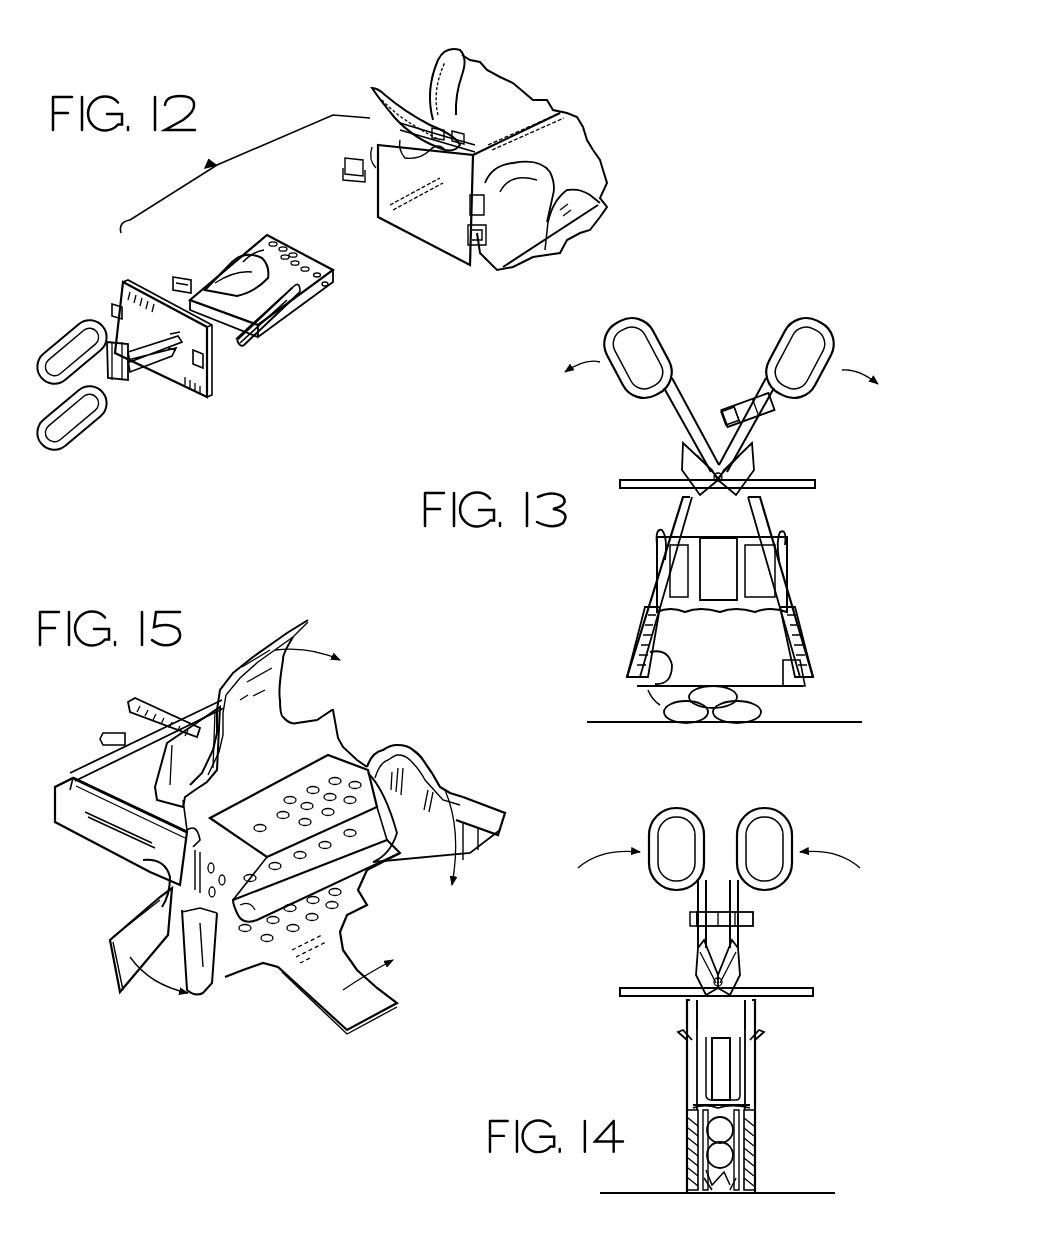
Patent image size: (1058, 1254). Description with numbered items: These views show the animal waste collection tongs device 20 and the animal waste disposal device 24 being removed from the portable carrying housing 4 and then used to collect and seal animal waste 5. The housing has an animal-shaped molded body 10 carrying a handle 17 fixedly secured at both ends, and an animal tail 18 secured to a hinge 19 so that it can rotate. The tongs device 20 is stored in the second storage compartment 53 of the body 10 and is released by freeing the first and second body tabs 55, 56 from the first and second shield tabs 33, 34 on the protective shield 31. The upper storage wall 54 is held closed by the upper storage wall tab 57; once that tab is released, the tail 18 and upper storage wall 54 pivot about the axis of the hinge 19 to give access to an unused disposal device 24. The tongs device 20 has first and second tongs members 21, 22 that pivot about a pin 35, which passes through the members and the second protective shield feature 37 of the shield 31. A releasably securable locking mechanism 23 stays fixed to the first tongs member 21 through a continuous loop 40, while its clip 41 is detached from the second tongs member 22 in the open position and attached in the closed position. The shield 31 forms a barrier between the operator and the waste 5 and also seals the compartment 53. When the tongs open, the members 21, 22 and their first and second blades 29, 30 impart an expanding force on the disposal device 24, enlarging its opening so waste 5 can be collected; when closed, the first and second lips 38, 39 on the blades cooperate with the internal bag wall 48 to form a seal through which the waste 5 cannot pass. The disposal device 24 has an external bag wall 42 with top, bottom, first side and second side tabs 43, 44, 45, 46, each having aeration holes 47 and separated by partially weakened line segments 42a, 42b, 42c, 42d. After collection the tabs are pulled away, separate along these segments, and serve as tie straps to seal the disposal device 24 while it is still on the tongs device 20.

In FIG. 12, the portable carrying housing 4 is at (552, 80).
In FIG. 13, the animal waste 5 is at (783, 722).
In FIG. 14, the animal waste 5 is at (722, 1150).
In FIG. 12, the molded body 10 is at (608, 157).
In FIG. 12, the handle 17 is at (440, 42).
In FIG. 12, the tail 18 is at (372, 95).
In FIG. 12, the hinge 19 is at (420, 118).
In FIG. 12, the animal waste collection tongs device 20 is at (103, 448).
In FIG. 12, the first tongs member 21 is at (55, 350).
In FIG. 13, the first tongs member 21 is at (826, 325).
In FIG. 14, the first tongs member 21 is at (780, 815).
In FIG. 15, the first tongs member 21 is at (103, 728).
In FIG. 12, the second tongs member 22 is at (65, 445).
In FIG. 13, the second tongs member 22 is at (645, 322).
In FIG. 14, the second tongs member 22 is at (665, 815).
In FIG. 15, the second tongs member 22 is at (160, 708).
In FIG. 12, the locking mechanism 23 is at (125, 382).
In FIG. 13, the locking mechanism 23 is at (740, 390).
In FIG. 14, the locking mechanism 23 is at (720, 895).
In FIG. 12, the animal waste disposal device 24 is at (278, 232).
In FIG. 13, the first blade 29 is at (640, 625).
In FIG. 14, the first blade 29 is at (695, 1133).
In FIG. 12, the second blade 30 is at (290, 315).
In FIG. 13, the second blade 30 is at (790, 636).
In FIG. 14, the second blade 30 is at (755, 1135).
In FIG. 15, the second blade 30 is at (203, 730).
In FIG. 12, the protective shield 31 is at (170, 378).
In FIG. 13, the protective shield 31 is at (822, 478).
In FIG. 14, the protective shield 31 is at (802, 985).
In FIG. 12, the first shield tab 33 is at (112, 308).
In FIG. 12, the second shield tab 34 is at (210, 368).
In FIG. 13, the pin 35 is at (700, 478).
In FIG. 14, the pin 35 is at (710, 983).
In FIG. 13, the second protective shield feature 37 is at (738, 478).
In FIG. 14, the second protective shield feature 37 is at (730, 983).
In FIG. 13, the first lip 38 is at (648, 680).
In FIG. 14, the first lip 38 is at (700, 1195).
In FIG. 13, the second lip 39 is at (795, 680).
In FIG. 14, the second lip 39 is at (738, 1195).
In FIG. 13, the continuous loop 40 is at (776, 414).
In FIG. 14, the continuous loop 40 is at (755, 918).
In FIG. 13, the clip 41 is at (728, 404).
In FIG. 14, the clip 41 is at (697, 920).
In FIG. 12, the external bag wall 42 is at (210, 262).
In FIG. 13, the external bag wall 42 is at (748, 550).
In FIG. 14, the external bag wall 42 is at (725, 1030).
In FIG. 15, the external bag wall 42 is at (120, 788).
In FIG. 15, the line segment 42a is at (348, 740).
In FIG. 15, the line segment 42b is at (133, 852).
In FIG. 15, the line segment 42c is at (203, 992).
In FIG. 15, the line segment 42d is at (360, 878).
In FIG. 12, the top tab 43 is at (243, 265).
In FIG. 13, the top tab 43 is at (790, 548).
In FIG. 14, the top tab 43 is at (770, 1052).
In FIG. 15, the top tab 43 is at (250, 672).
In FIG. 13, the bottom tab 44 is at (655, 540).
In FIG. 14, the bottom tab 44 is at (672, 1045).
In FIG. 15, the bottom tab 44 is at (315, 1018).
In FIG. 12, the first side tab 45 is at (175, 277).
In FIG. 15, the first side tab 45 is at (450, 800).
In FIG. 12, the second side tab 46 is at (262, 340).
In FIG. 13, the second side tab 46 is at (723, 556).
In FIG. 14, the second side tab 46 is at (722, 1060).
In FIG. 15, the second side tab 46 is at (115, 965).
In FIG. 12, the aeration holes 47 is at (296, 245).
In FIG. 15, the aeration holes 47 is at (315, 780).
In FIG. 13, the internal bag wall 48 is at (650, 700).
In FIG. 14, the internal bag wall 48 is at (712, 1163).
In FIG. 12, the second storage compartment 53 is at (444, 229).
In FIG. 12, the upper storage wall 54 is at (560, 118).
In FIG. 12, the first body tab 55 is at (345, 165).
In FIG. 12, the second body tab 56 is at (510, 248).
In FIG. 12, the upper storage wall tab 57 is at (372, 150).